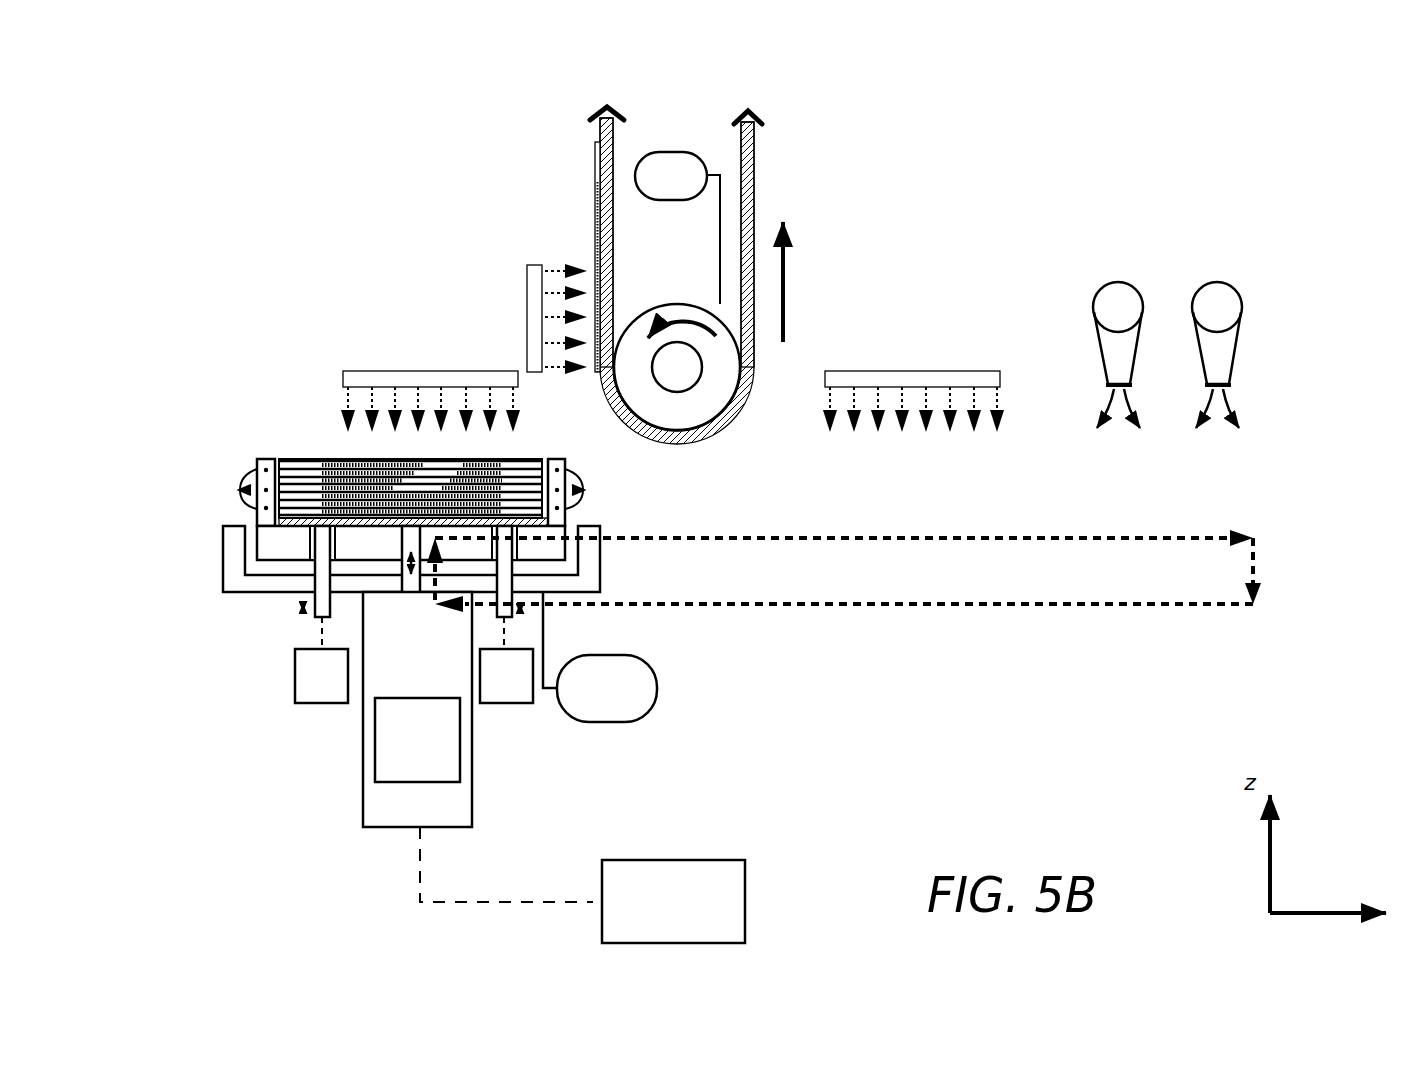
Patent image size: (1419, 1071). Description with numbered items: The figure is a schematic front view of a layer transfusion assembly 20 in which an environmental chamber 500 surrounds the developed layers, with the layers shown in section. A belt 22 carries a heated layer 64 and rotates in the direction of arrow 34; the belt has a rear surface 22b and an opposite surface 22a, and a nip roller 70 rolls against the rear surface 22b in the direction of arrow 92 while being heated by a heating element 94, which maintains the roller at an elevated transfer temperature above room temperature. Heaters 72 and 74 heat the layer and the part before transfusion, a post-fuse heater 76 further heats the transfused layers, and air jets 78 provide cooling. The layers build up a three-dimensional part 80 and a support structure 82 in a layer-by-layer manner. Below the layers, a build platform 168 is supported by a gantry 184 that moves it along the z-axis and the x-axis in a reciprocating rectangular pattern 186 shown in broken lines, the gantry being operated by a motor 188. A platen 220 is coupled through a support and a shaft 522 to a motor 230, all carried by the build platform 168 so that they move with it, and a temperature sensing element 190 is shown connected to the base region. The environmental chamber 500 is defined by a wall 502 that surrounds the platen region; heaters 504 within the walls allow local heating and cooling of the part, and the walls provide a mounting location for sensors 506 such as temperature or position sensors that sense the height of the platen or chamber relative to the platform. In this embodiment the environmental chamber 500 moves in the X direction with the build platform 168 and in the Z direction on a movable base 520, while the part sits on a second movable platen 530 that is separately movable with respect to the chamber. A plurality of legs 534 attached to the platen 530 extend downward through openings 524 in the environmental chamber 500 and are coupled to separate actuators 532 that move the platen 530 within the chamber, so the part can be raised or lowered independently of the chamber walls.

The layer transfusion assembly 20 is at (1316, 622).
The belt 22 is at (671, 262).
The belt surface 22a is at (757, 165).
The rear surface 22b is at (614, 146).
The arrow 34 is at (785, 247).
The layer 64 is at (592, 222).
The nip roller 70 is at (627, 320).
The heater 72 is at (524, 283).
The heater 74 is at (386, 366).
The post-fuse heater 76 is at (900, 362).
The air jets 78 is at (1217, 282).
The 3D part 80 is at (333, 460).
The support structure 82 is at (286, 460).
The arrow 92 is at (697, 323).
The heating element 94 is at (655, 152).
The build platform 168 is at (223, 550).
The gantry 184 is at (472, 750).
The pattern 186 is at (960, 606).
The motor 188 is at (745, 884).
The temperature sensor 190 is at (658, 690).
The platen 220 is at (562, 527).
The motor 230 is at (375, 740).
The environmental chamber 500 is at (476, 465).
The wall 502 is at (257, 462).
The heaters 504 is at (589, 492).
The sensors 506 is at (225, 489).
The movable base 520 is at (586, 567).
The drive shaft 522 is at (385, 675).
The openings 524 is at (350, 546).
The movable platen 530 is at (277, 608).
The actuators 532 is at (295, 685).
The legs 534 is at (313, 618).